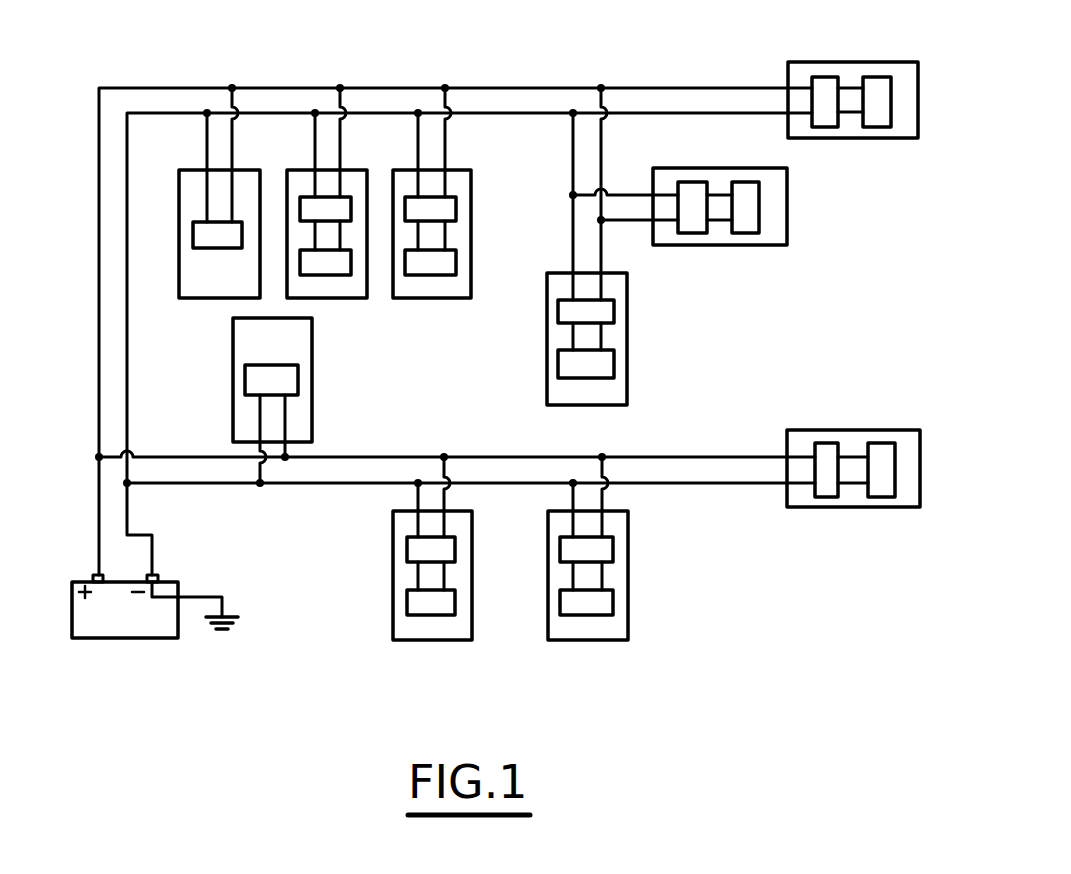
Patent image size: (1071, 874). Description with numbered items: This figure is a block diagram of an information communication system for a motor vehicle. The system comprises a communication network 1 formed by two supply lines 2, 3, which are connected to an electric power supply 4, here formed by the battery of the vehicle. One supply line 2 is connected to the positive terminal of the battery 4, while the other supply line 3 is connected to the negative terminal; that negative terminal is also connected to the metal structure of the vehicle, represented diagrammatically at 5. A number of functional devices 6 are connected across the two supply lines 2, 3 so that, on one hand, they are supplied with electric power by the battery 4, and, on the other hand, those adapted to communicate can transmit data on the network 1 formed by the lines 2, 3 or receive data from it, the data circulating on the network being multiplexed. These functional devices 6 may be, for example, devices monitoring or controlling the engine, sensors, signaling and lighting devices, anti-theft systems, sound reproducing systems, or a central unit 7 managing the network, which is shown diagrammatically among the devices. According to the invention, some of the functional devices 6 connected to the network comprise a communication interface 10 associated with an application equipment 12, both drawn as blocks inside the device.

The communication network 1 is at (88, 160).
The supply line 2 is at (98, 372).
The supply line 3 is at (127, 380).
The electric power supply 4 is at (110, 641).
The metal structure of the vehicle 5 is at (228, 608).
The functional device 6 is at (204, 301).
The central unit 7 is at (233, 366).
The communication interface 10 is at (403, 205).
The application equipment 12 is at (406, 262).